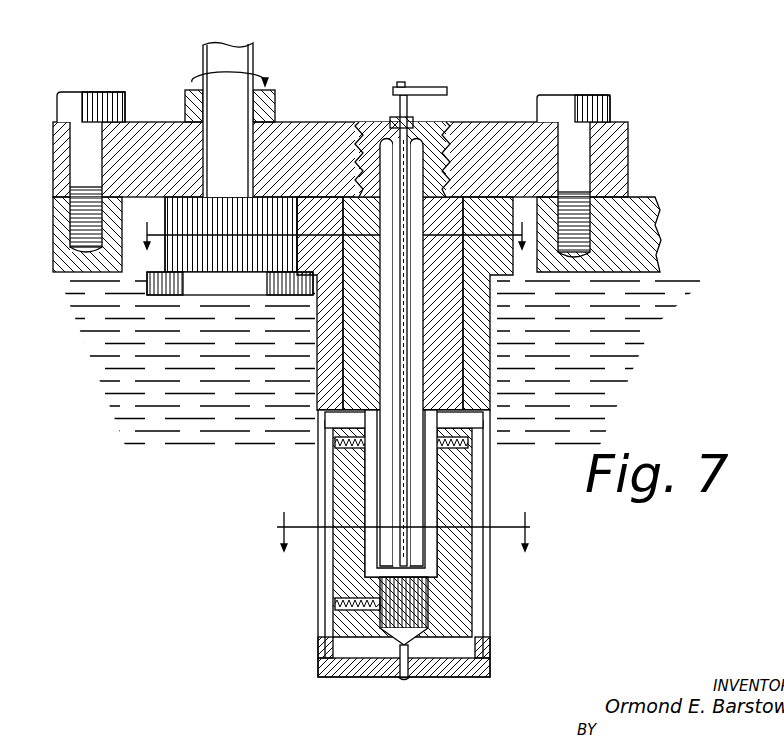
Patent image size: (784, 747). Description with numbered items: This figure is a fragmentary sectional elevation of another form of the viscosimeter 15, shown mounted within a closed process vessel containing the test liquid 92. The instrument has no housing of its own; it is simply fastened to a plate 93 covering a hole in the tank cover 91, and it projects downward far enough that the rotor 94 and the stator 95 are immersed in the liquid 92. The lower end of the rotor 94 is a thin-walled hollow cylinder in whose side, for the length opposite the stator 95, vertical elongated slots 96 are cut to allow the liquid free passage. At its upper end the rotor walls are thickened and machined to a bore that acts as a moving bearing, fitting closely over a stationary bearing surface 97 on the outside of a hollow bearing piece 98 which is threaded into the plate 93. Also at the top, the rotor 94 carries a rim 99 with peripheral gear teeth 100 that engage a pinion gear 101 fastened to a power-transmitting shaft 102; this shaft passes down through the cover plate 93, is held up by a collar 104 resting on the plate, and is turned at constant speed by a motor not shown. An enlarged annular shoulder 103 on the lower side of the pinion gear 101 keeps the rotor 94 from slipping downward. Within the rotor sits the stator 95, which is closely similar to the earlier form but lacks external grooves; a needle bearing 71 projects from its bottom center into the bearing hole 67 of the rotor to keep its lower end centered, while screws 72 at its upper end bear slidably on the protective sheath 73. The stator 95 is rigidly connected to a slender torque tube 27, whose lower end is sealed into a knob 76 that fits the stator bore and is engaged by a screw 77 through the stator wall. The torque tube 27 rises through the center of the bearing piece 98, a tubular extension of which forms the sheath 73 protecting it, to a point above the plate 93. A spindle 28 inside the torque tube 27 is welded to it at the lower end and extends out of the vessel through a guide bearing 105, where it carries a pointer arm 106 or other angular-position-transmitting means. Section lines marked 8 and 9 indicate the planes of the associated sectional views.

The section line 8- 8 is at (333, 247).
The section line 9- 9 is at (403, 536).
The viscosimeter 15 is at (403, 573).
The torque tube 27 is at (412, 330).
The spindle 28 is at (408, 365).
The bearing hole 67 is at (398, 675).
The needle bearing 71 is at (398, 656).
The screws 72 is at (335, 441).
The protective sheath 73 is at (428, 470).
The knob 76 is at (380, 588).
The screw 77 is at (335, 604).
The cover 91 is at (645, 238).
The liquid 92 is at (607, 333).
The plate 93 is at (618, 161).
The rotor 94 is at (325, 388).
The stator 95 is at (340, 466).
The slots 96 is at (318, 488).
The bearing surface 97 is at (330, 358).
The bearing piece 98 is at (343, 330).
The rim 99 is at (305, 285).
The gear teeth 100 is at (290, 250).
The pinion gear 101 is at (205, 265).
The power-transmitting shaft 102 is at (215, 57).
The annular shoulder 103 is at (147, 283).
The collar 104 is at (187, 99).
The guide bearing 105 is at (392, 120).
The pointer arm 106 is at (432, 88).